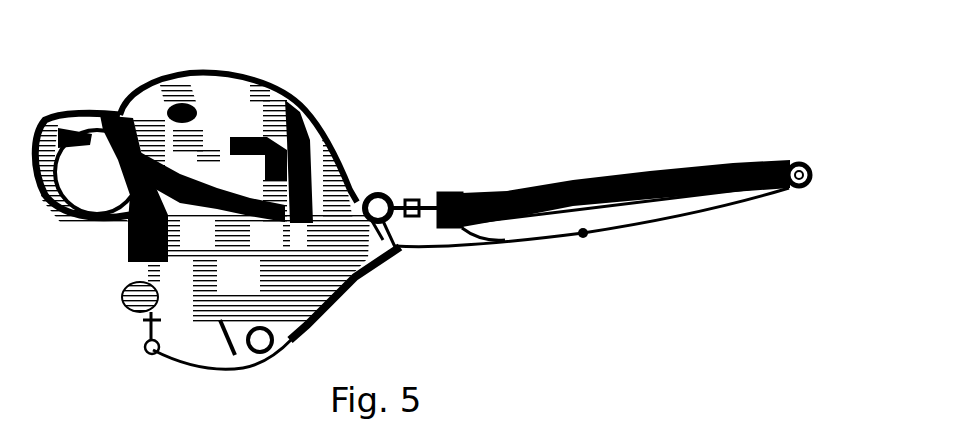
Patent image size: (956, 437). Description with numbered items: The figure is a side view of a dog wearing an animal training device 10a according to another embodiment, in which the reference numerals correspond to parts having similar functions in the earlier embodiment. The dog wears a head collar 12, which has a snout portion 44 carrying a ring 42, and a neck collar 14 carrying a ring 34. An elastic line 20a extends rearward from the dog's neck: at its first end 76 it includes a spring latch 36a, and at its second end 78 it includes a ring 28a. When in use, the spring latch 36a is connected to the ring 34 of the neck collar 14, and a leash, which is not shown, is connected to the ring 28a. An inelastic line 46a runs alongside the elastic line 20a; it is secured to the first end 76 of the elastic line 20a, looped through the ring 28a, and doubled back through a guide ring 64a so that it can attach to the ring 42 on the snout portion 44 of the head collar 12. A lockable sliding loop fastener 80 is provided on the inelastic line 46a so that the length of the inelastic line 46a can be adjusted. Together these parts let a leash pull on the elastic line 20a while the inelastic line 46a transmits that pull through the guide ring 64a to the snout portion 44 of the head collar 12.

The animal training device 10a is at (653, 127).
The head collar 12 is at (105, 113).
The neck collar 14 is at (365, 277).
The elastic line 20a is at (596, 186).
The ring 28a is at (805, 188).
The ring 34 is at (382, 194).
The spring latch 36a is at (425, 202).
The ring 42 is at (124, 308).
The snout portion 44 is at (128, 233).
The inelastic line 46a is at (726, 203).
The guide ring 64a is at (403, 248).
The first end 76 is at (470, 233).
The second end 78 is at (785, 163).
The lockable sliding loop fastener 80 is at (583, 237).